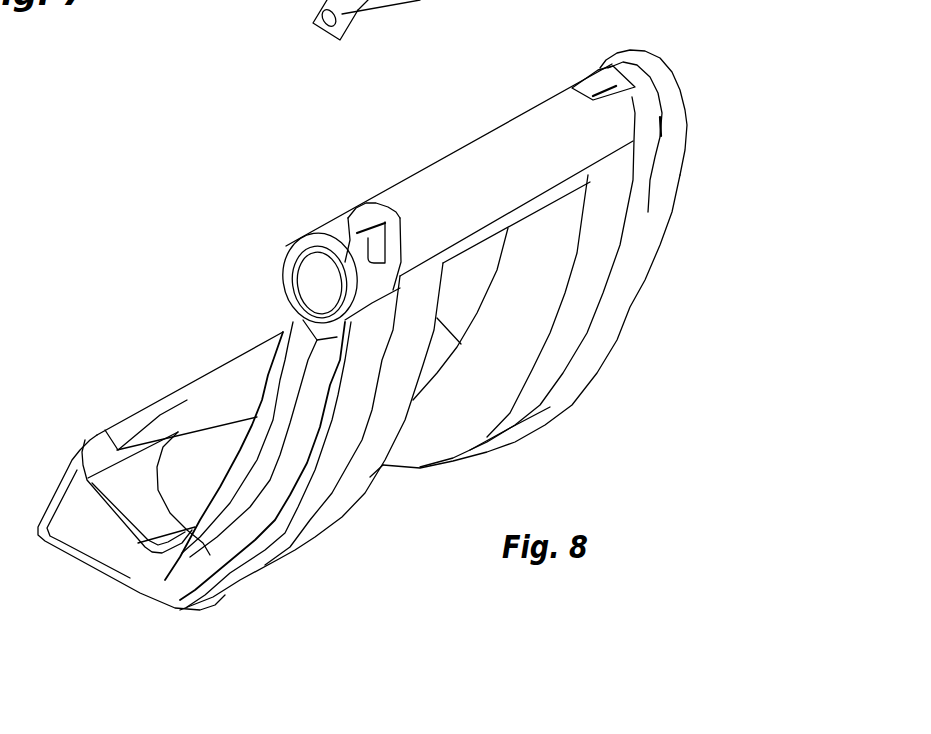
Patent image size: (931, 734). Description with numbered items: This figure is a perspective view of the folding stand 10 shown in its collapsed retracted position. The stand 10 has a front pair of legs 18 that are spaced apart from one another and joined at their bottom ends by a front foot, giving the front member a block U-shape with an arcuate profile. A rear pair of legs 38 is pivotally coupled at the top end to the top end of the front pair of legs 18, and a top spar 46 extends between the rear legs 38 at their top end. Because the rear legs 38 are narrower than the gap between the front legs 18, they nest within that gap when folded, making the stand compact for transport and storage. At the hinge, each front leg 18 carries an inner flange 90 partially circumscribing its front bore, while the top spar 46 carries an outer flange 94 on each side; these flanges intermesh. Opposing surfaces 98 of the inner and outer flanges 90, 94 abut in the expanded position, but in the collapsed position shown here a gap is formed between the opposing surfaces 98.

The folding stand 10 is at (391, 305).
The front pair of legs 18 is at (642, 265).
The rear pair of legs 38 is at (485, 397).
The top spar 46 is at (517, 135).
The inner flange 90 is at (592, 73).
The outer flange 94 is at (380, 272).
The opposing surfaces 98 is at (598, 75).